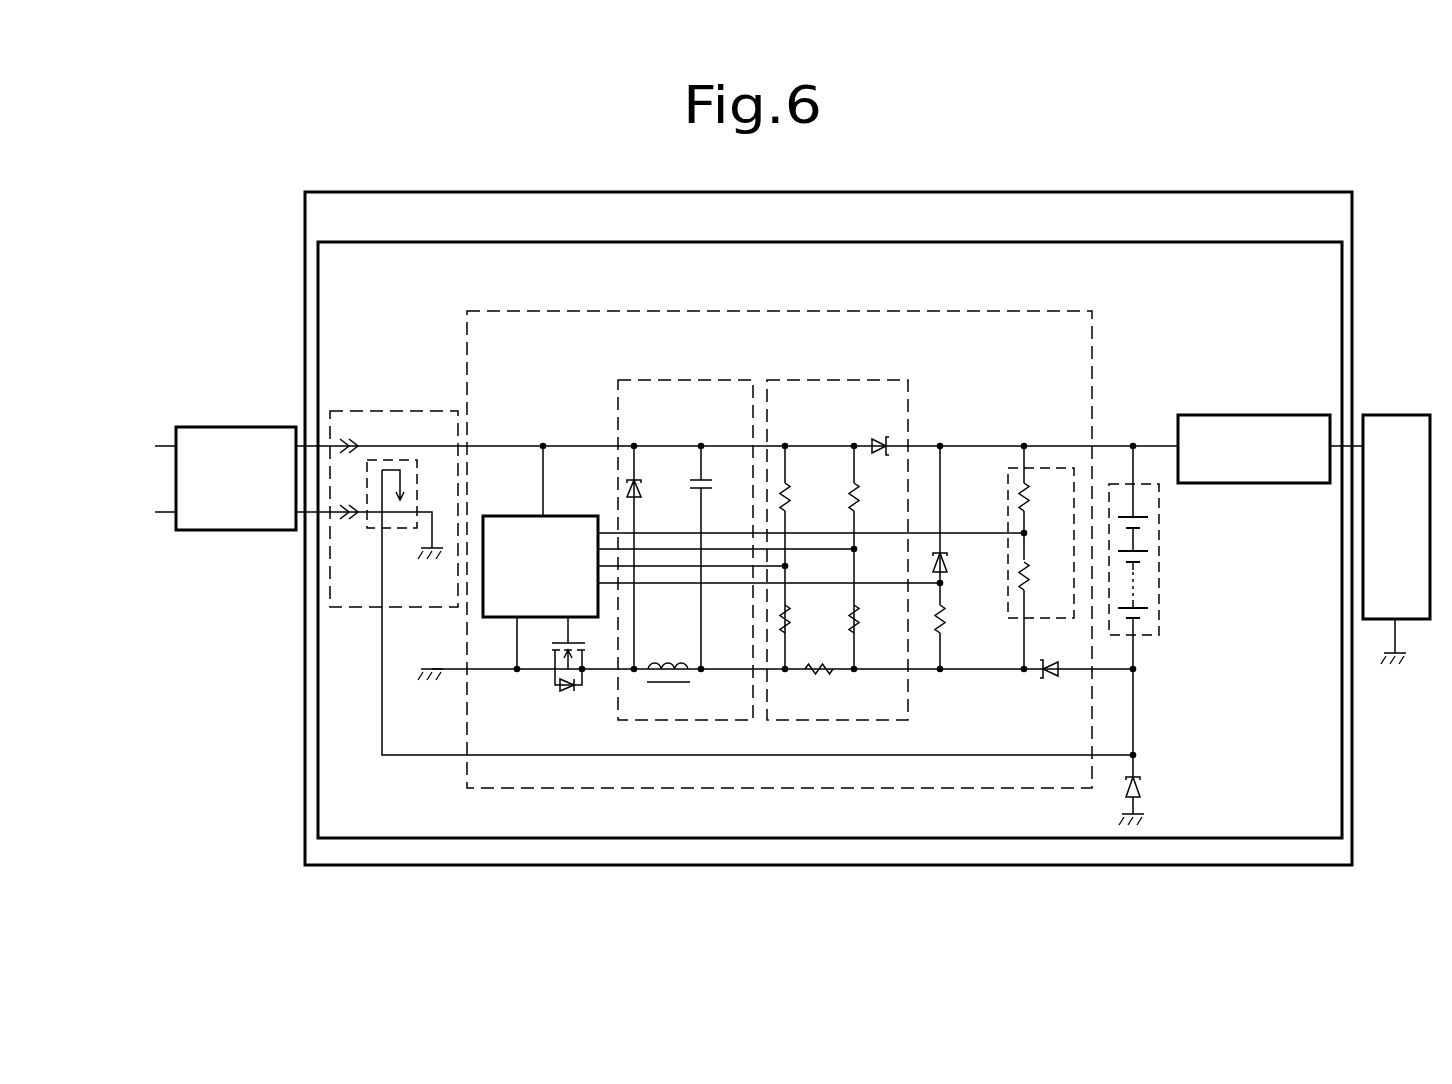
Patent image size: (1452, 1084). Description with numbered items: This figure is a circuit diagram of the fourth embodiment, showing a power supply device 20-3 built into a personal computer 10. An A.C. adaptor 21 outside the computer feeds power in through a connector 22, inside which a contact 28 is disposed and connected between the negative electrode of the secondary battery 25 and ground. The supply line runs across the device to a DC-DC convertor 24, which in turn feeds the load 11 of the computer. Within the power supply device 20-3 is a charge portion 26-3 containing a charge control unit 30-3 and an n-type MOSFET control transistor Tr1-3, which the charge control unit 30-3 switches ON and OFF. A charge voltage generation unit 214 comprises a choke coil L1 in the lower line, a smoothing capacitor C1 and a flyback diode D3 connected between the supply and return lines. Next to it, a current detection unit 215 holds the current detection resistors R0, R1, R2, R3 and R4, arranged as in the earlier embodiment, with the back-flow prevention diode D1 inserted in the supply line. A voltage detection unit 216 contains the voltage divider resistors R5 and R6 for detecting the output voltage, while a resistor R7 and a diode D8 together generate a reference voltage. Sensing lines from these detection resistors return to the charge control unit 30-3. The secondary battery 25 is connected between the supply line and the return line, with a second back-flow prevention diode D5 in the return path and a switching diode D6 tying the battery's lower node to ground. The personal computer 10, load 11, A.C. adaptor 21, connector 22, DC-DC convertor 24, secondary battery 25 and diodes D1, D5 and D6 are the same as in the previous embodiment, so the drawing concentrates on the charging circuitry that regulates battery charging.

The personal computer 10 is at (1027, 193).
The power supply device 20-3 is at (1027, 243).
The charge portion 26-3 is at (738, 311).
The A.C. adaptor 21 is at (240, 427).
The connector 22 is at (372, 411).
The contact 28 is at (372, 530).
The charge control unit 30-3 is at (520, 516).
The charge voltage generation unit 214 is at (705, 380).
The current detection unit 215 is at (853, 380).
The voltage detection unit 216 is at (1008, 512).
The DC-DC convertor 24 is at (1240, 415).
The load 11 is at (1396, 415).
The secondary battery 25 is at (1155, 636).
The n-type MOSFET control transistor Tr1-3 is at (573, 684).
The back-flow prevention diode D1 is at (881, 429).
The flyback diode D3 is at (653, 557).
The back-flow prevention diode D5 is at (1055, 684).
The switching diode D6 is at (1153, 747).
The diode D8 is at (961, 564).
The smoothing capacitor C1 is at (713, 557).
The choke coil L1 is at (668, 656).
The current detection resistor R0 is at (823, 686).
The current detection resistor R1 is at (802, 557).
The current detection resistor R2 is at (802, 622).
The current detection resistor R3 is at (872, 557).
The current detection resistor R4 is at (872, 622).
The voltage divider resistor R5 is at (1042, 499).
The voltage divider resistor R6 is at (1042, 577).
The resistor R7 is at (961, 557).